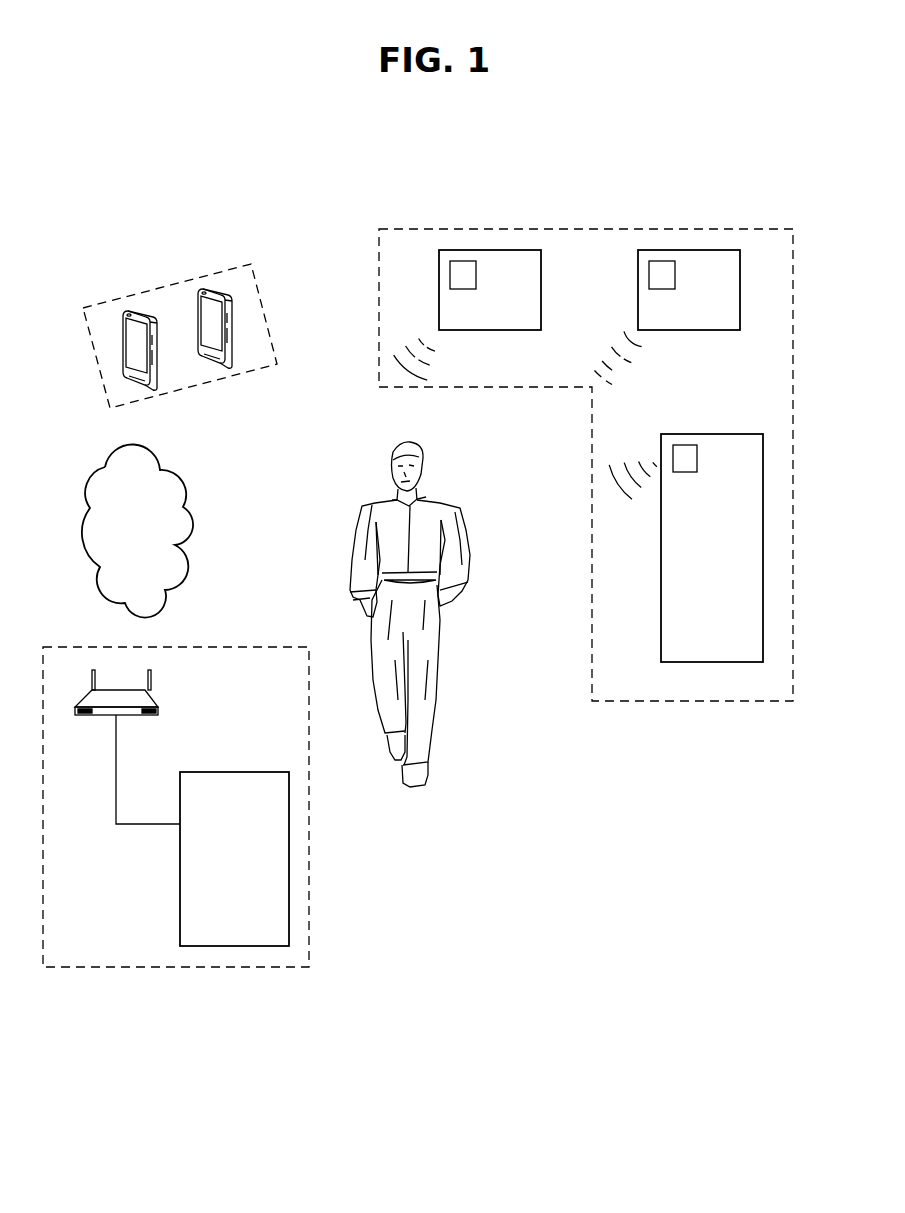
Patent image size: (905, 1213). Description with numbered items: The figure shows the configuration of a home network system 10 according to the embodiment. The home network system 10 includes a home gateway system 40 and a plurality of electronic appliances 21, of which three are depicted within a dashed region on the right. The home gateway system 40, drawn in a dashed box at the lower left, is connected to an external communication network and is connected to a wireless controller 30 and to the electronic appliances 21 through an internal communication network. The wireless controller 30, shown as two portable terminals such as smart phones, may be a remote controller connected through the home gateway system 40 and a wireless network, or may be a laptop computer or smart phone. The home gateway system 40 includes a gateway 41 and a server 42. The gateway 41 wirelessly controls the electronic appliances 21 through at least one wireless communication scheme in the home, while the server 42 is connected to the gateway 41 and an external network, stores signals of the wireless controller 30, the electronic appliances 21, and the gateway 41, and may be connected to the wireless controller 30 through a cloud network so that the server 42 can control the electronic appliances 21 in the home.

The home network system 10 is at (784, 143).
The electronic appliance 21 is at (602, 228).
The wireless controller 30 is at (207, 290).
The home gateway system 40 is at (309, 862).
The gateway 41 is at (98, 716).
The server 42 is at (234, 947).